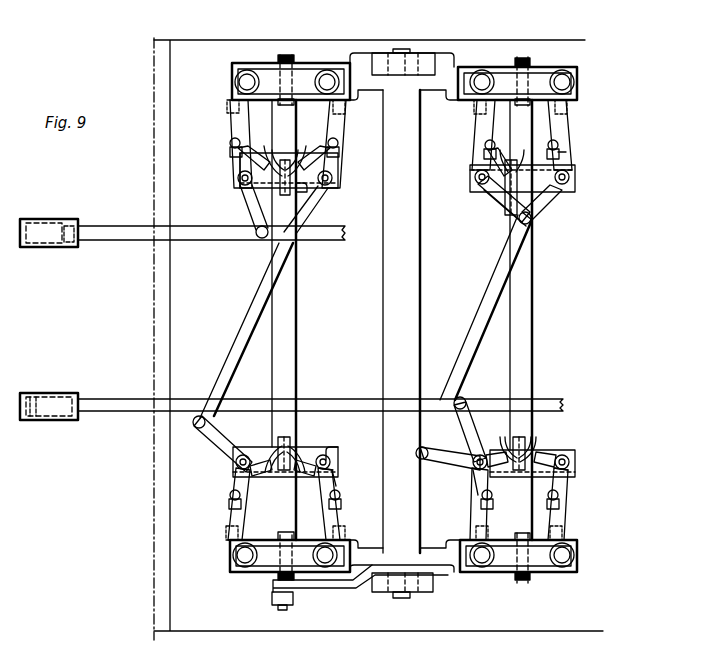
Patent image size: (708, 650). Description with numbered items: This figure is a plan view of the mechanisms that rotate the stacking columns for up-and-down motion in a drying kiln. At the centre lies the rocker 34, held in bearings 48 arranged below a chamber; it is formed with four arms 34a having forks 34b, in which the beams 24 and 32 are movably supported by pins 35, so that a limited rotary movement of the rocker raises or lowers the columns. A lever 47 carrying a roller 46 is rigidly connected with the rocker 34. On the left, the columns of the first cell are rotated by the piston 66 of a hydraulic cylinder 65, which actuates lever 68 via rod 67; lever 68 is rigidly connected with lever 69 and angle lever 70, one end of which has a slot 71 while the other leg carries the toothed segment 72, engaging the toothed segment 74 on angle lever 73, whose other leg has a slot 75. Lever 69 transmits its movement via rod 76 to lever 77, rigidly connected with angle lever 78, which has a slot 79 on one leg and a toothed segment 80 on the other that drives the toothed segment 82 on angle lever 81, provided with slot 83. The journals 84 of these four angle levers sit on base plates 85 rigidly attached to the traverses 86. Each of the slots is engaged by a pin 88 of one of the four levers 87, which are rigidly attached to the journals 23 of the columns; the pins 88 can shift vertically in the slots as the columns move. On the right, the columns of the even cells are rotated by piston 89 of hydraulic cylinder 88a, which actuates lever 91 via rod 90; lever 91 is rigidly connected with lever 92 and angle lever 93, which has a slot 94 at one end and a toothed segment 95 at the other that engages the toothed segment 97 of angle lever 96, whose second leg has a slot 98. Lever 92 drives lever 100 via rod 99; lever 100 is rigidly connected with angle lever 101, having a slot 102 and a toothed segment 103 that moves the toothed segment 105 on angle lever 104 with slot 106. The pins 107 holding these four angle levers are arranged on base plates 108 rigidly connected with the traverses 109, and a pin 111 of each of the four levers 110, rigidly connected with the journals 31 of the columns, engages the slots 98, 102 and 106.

The journals 23 is at (247, 80).
The beams 24 is at (240, 84).
The journals 31 is at (575, 82).
The beams 32 is at (547, 67).
The rocker 34 is at (418, 297).
The arms 34a is at (367, 53).
The forks 34b is at (308, 63).
The pins 35 is at (280, 55).
The roller 46 is at (272, 600).
The lever 47 is at (322, 592).
The bearings 48 is at (415, 53).
The hydraulic cylinder 65 is at (25, 222).
The piston 66 is at (66, 225).
The rod 67 is at (113, 232).
The lever 68 is at (250, 205).
The lever 69 is at (300, 200).
The angle lever 70 is at (240, 158).
The slot 71 is at (250, 145).
The toothed segment 72 is at (275, 160).
The angle lever 73 is at (338, 160).
The toothed segment 74 is at (302, 160).
The slot 75 is at (302, 148).
The rod 76 is at (250, 296).
The lever 77 is at (218, 440).
The angle lever 78 is at (232, 478).
The slot 79 is at (232, 495).
The toothed segment 80 is at (268, 450).
The angle lever 81 is at (335, 465).
The toothed segment 82 is at (298, 452).
The slot 83 is at (338, 480).
The journals 84 is at (245, 176).
The base plates 85 is at (335, 187).
The traverses 86 is at (297, 297).
The levers 87 is at (237, 120).
The pin 88 is at (233, 143).
The hydraulic cylinder 88a is at (76, 398).
The piston 89 is at (33, 395).
The rod 90 is at (120, 410).
The lever 91 is at (468, 427).
The lever 92 is at (425, 460).
The angle lever 93 is at (478, 480).
The slot 94 is at (487, 495).
The toothed segment 95 is at (508, 443).
The angle lever 96 is at (562, 478).
The toothed segment 97 is at (537, 442).
The slot 98 is at (560, 492).
The rod 99 is at (478, 315).
The lever 100 is at (493, 195).
The angle lever 101 is at (503, 168).
The slot 102 is at (505, 153).
The toothed segment 103 is at (510, 207).
The angle lever 104 is at (547, 197).
The toothed segment 105 is at (530, 212).
The slot 106 is at (563, 152).
The pins 107 is at (478, 177).
The base plates 108 is at (575, 172).
The traverses 109 is at (532, 318).
The levers 110 is at (480, 125).
The pin 111 is at (490, 145).